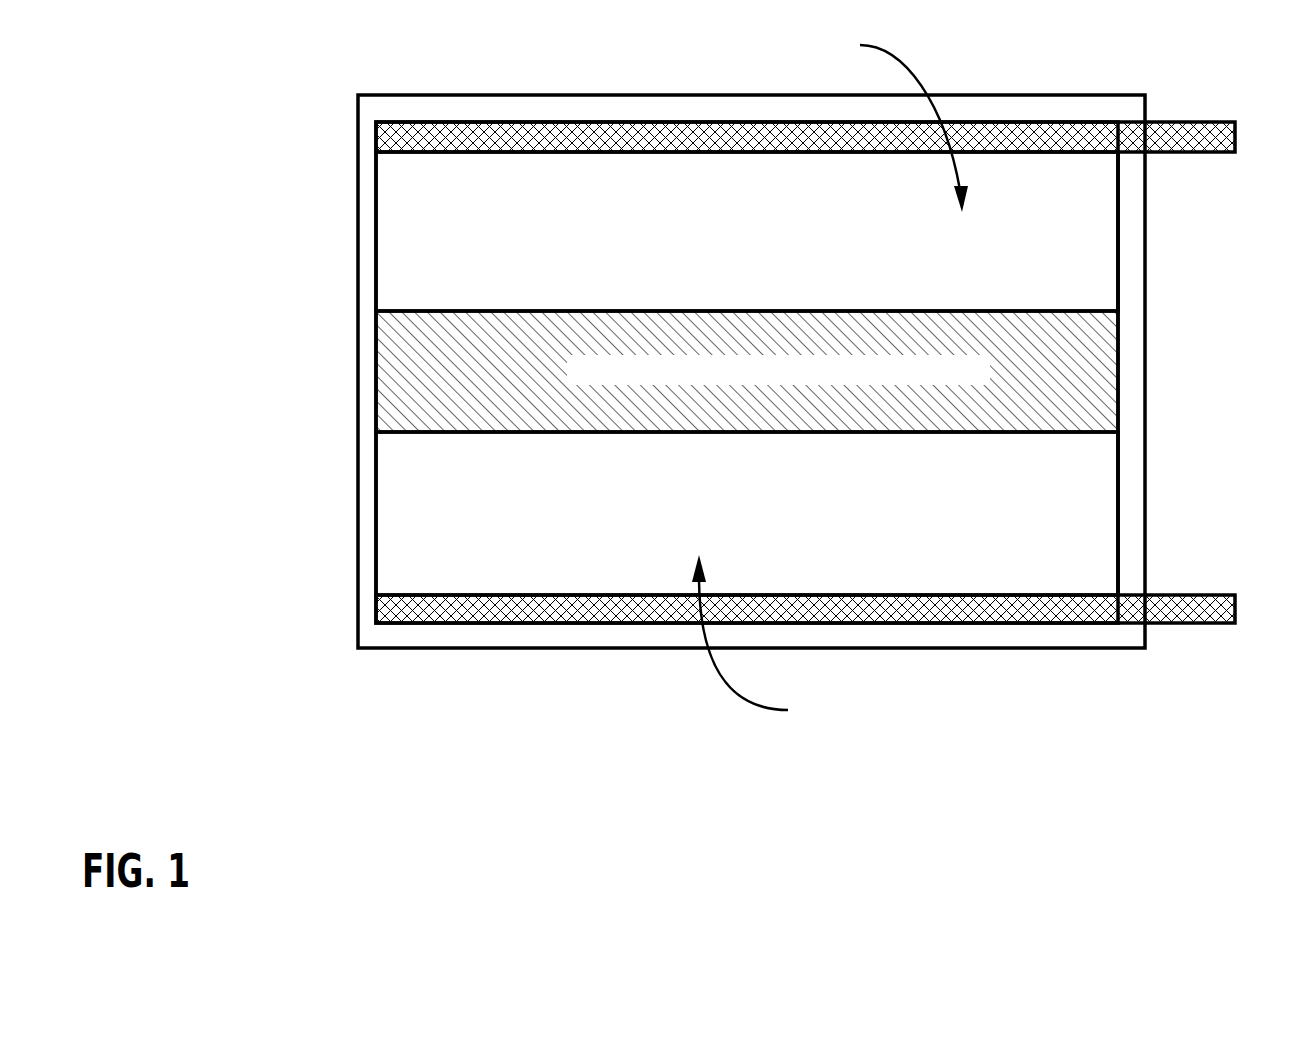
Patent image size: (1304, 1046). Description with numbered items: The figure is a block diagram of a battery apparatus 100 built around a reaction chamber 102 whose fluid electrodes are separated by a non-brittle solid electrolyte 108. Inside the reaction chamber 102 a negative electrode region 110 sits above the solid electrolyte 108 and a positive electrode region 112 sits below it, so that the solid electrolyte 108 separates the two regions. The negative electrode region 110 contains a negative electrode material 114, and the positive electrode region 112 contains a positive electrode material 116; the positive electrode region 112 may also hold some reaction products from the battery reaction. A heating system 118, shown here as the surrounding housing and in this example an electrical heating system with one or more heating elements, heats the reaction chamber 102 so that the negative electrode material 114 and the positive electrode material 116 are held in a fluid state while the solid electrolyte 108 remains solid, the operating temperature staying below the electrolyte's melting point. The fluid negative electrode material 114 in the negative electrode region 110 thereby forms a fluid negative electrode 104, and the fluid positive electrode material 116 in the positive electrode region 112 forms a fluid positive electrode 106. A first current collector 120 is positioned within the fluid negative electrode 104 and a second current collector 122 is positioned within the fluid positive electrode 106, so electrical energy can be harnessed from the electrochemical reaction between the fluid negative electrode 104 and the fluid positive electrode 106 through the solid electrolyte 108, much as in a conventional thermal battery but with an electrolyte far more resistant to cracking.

The battery apparatus 100 is at (287, 724).
The reaction chamber 102 is at (283, 630).
The fluid negative electrode 104 is at (1120, 217).
The fluid positive electrode 106 is at (1120, 527).
The solid electrolyte 108 is at (1120, 370).
The negative electrode region 110 is at (345, 311).
The positive electrode region 112 is at (345, 610).
The negative electrode material 114 is at (891, 123).
The positive electrode material 116 is at (763, 639).
The heating system 118 is at (1146, 480).
The first current collector 120 is at (1187, 122).
The second current collector 122 is at (1205, 625).